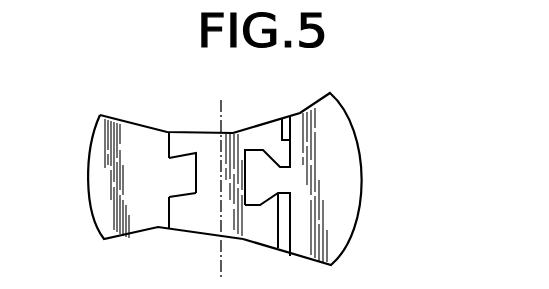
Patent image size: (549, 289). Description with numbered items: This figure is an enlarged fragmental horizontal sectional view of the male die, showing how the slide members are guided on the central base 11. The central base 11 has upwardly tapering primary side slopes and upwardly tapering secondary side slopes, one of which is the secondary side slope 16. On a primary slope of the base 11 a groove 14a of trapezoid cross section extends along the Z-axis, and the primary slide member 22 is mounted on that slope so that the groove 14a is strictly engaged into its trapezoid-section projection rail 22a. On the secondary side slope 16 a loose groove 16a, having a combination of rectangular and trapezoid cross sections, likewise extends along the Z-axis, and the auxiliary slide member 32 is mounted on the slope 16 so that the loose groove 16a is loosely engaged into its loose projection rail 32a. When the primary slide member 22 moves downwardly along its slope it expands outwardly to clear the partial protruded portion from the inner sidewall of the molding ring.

The central base 11 is at (258, 246).
The primary slide member 22 is at (122, 120).
The projection rail 22a is at (178, 159).
The groove 14a is at (192, 201).
The secondary side slope 16 is at (295, 140).
The loose groove 16a is at (260, 178).
The auxiliary slide member 32 is at (343, 153).
The loose projection rail 32a is at (260, 180).